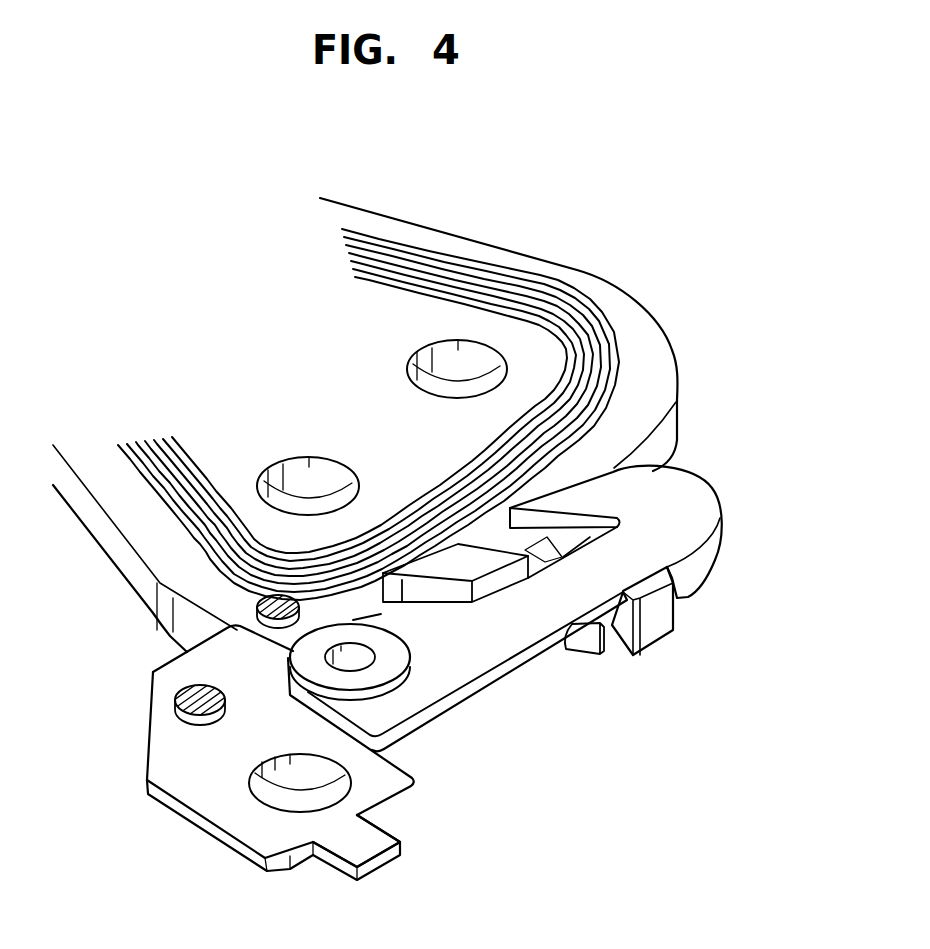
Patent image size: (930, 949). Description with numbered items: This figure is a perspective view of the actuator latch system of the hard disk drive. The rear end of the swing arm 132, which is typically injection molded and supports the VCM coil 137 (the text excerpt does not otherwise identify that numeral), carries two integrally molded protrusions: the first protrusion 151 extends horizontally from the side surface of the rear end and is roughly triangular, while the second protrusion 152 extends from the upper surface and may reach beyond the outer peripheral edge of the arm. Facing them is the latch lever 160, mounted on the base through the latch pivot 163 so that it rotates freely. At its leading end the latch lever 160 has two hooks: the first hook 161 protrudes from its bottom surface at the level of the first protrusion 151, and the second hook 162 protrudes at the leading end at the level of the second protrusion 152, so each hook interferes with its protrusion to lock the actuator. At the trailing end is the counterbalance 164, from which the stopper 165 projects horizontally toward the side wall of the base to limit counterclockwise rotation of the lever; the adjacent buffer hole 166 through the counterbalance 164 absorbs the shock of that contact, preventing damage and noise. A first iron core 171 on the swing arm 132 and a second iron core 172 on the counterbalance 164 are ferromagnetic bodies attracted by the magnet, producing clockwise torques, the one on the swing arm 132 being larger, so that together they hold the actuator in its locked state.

The swing arm 132 is at (637, 320).
The flexible printed circuit 137 is at (487, 290).
The first protrusion 151 is at (600, 654).
The second protrusion 152 is at (440, 570).
The latch lever 160 is at (498, 709).
The first hook 161 is at (657, 635).
The second hook 162 is at (553, 497).
The latch pivot 163 is at (357, 662).
The counterbalance 164 is at (180, 790).
The stopper 165 is at (372, 850).
The buffer hole 166 is at (283, 797).
The first iron core 171 is at (258, 607).
The second iron core 172 is at (182, 700).